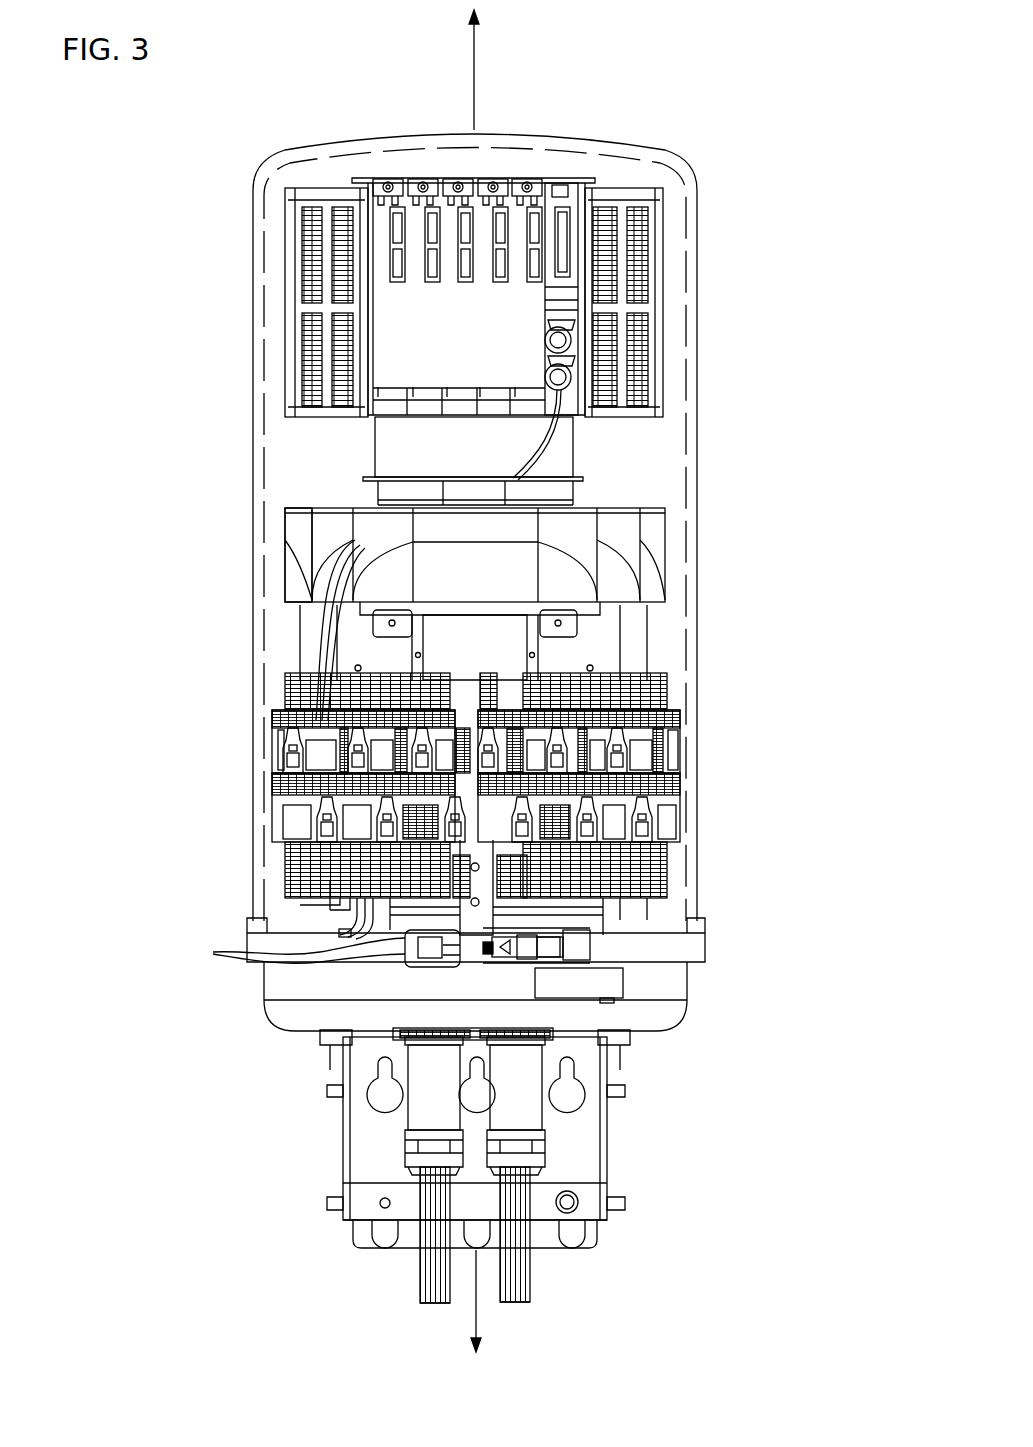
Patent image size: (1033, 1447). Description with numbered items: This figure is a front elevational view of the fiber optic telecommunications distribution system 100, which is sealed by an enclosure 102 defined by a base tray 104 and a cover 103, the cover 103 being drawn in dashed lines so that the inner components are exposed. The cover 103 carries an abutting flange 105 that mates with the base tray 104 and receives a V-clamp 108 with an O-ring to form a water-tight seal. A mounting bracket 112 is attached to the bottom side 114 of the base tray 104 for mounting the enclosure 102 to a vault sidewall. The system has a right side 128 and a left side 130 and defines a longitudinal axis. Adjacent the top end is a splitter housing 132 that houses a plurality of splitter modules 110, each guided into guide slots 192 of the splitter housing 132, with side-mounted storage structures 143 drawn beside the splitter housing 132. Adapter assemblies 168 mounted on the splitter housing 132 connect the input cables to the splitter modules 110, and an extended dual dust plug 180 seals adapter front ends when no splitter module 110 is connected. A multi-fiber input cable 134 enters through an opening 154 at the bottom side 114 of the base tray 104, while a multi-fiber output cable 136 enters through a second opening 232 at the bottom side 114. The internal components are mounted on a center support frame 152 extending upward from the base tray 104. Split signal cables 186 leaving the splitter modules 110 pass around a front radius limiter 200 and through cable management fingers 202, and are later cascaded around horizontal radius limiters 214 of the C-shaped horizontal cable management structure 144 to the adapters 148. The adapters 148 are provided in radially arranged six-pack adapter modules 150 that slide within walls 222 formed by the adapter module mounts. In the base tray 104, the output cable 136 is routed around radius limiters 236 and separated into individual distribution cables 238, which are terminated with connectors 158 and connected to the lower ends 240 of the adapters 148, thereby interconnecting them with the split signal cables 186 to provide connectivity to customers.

The fiber optic telecommunications distribution system 100 is at (760, 387).
The enclosure 102 is at (672, 1012).
The cover 103 is at (256, 228).
The base tray 104 is at (275, 984).
The flange 105 is at (705, 926).
The V-clamp 108 is at (550, 945).
The splitter module 110 is at (578, 292).
The mounting bracket 112 is at (608, 1140).
The bottom side 114 is at (585, 1030).
The right side 128 is at (283, 514).
The left side 130 is at (663, 513).
The splitter housing 132 is at (392, 183).
The input cable 134 is at (530, 1292).
The output cable 136 is at (527, 1273).
The adapter panel 143 is at (652, 296).
The horizontal cable management structure 144 is at (618, 580).
The adapter 148 is at (639, 735).
The adapter module 150 is at (619, 756).
The center support frame 152 is at (568, 620).
The opening 154 is at (530, 1177).
The connector 158 is at (664, 791).
The adapter assembly 168 is at (511, 170).
The extended dual dust plug 180 is at (467, 265).
The split signal cable 186 is at (321, 631).
The guide slot 192 is at (483, 385).
The front radius limiter 200 is at (558, 450).
The cable management fingers 202 is at (573, 488).
The horizontal radius limiter 214 is at (652, 529).
The wall 222 is at (360, 833).
The second opening 232 is at (425, 1177).
The radius limiter 236 is at (339, 931).
The individual distribution cable 238 is at (316, 948).
The lower end 240 is at (668, 855).